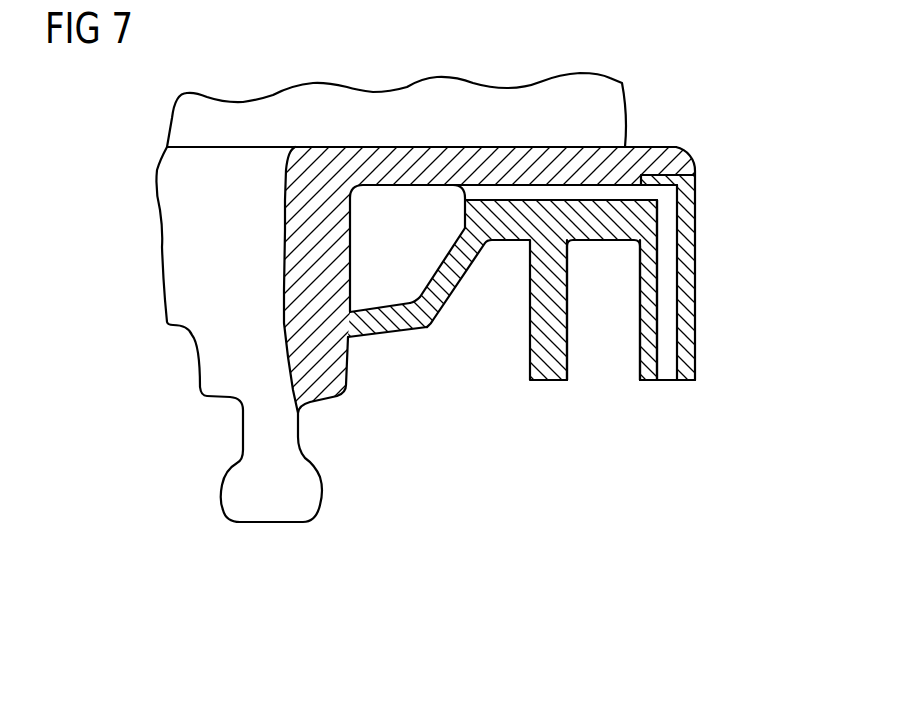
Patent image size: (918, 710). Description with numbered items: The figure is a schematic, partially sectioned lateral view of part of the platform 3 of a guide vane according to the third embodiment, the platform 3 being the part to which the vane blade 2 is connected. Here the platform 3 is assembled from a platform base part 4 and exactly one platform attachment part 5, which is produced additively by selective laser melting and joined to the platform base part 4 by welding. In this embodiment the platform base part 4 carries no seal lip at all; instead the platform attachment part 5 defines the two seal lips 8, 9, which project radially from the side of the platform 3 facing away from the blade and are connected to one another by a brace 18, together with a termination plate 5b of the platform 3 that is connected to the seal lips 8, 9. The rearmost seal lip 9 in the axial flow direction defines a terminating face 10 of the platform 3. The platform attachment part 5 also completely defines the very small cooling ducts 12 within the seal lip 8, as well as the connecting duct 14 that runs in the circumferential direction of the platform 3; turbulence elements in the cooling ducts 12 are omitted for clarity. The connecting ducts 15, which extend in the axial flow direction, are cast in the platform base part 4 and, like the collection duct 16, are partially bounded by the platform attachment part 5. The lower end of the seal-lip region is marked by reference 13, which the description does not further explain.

The vane blade 2 is at (603, 92).
The platform 3 is at (160, 197).
The platform base part 4 is at (695, 166).
The platform attachment part 5 is at (502, 321).
The seal lip 9 is at (552, 375).
The termination plate 5b is at (374, 325).
The seal lip 8 is at (690, 300).
The terminating face 10 is at (695, 240).
The cooling ducts 12 is at (667, 343).
The bottom end 13 is at (663, 383).
The connecting duct 14 is at (667, 192).
The connecting ducts 15 is at (537, 195).
The collection duct 16 is at (423, 263).
The brace 18 is at (612, 237).